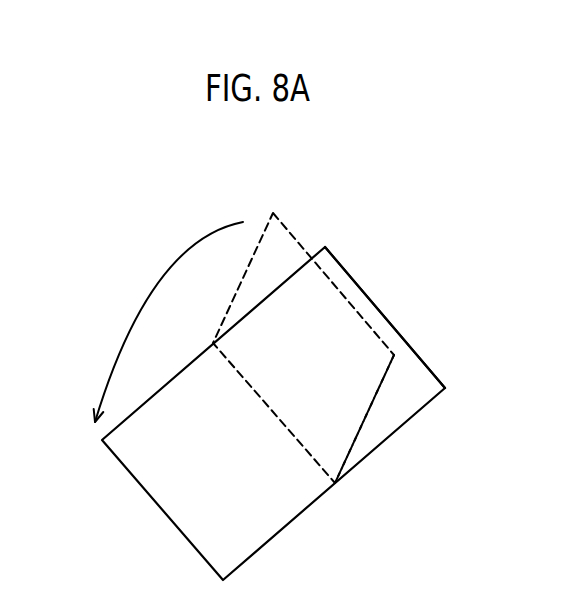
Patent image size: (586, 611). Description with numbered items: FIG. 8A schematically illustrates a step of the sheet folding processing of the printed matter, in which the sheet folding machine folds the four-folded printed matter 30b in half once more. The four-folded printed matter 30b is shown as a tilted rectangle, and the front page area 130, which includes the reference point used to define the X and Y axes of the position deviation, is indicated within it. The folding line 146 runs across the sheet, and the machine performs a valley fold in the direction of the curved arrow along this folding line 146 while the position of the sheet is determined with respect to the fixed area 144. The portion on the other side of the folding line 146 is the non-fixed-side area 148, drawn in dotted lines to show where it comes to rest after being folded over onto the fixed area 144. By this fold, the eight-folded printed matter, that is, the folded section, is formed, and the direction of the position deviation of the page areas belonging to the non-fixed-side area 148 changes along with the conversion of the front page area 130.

The four-folded printed matter 30b is at (114, 188).
The front page area 130 is at (313, 293).
The fixed area 144 is at (155, 479).
The folding line 146 is at (325, 480).
The non-fixed-side area 148 is at (281, 242).